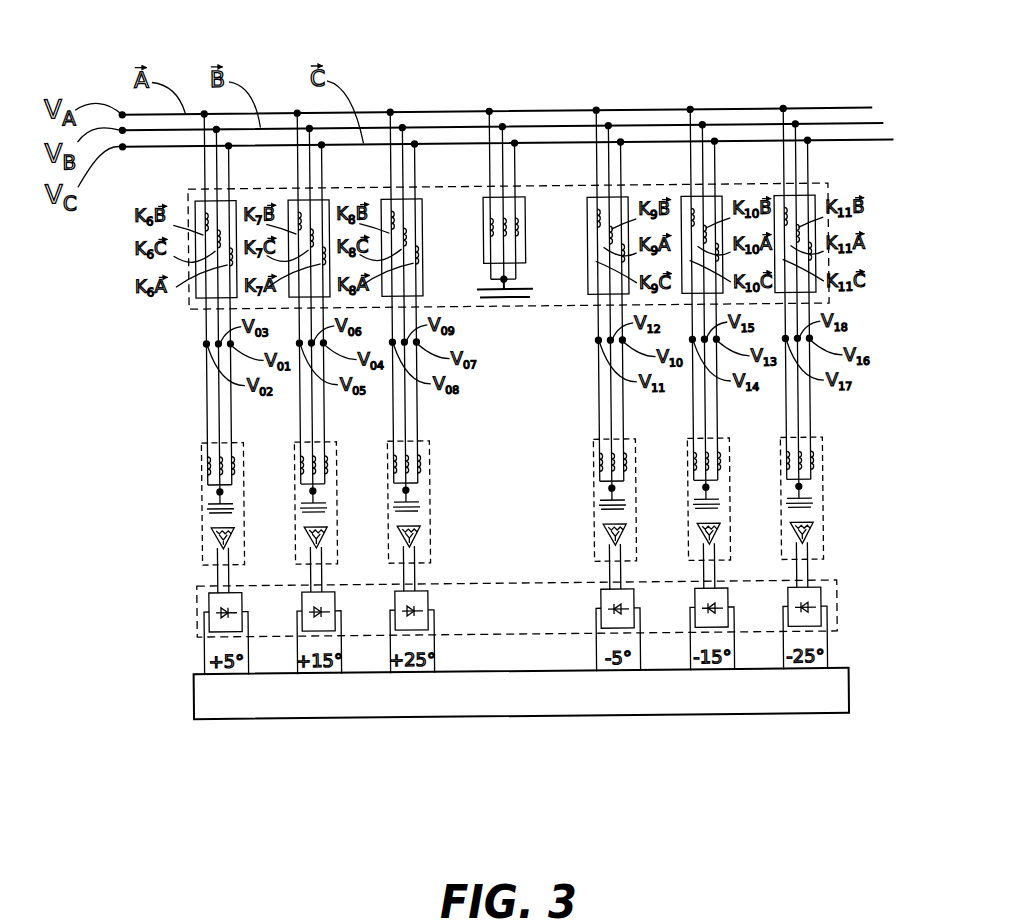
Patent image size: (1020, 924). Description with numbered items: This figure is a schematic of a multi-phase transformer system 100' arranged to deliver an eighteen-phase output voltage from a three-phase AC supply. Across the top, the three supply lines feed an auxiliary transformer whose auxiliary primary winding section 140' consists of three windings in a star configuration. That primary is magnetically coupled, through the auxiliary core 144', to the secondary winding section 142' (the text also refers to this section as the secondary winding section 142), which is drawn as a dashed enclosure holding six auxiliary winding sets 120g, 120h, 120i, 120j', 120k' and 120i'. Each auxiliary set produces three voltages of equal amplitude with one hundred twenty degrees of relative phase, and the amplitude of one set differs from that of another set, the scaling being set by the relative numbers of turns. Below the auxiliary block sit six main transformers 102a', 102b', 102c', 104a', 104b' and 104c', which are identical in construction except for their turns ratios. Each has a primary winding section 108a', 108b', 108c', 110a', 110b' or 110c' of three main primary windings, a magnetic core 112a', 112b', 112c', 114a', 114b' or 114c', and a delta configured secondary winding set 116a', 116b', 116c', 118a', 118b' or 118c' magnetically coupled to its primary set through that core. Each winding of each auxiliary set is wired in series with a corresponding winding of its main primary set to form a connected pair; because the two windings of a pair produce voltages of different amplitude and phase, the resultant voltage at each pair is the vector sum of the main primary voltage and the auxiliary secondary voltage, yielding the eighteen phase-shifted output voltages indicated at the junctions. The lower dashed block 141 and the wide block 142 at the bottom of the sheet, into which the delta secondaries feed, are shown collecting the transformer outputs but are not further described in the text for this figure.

The multi-phase transformer system 100' is at (510, 81).
The auxiliary winding set 120g is at (197, 198).
The auxiliary winding set 120h is at (290, 198).
The auxiliary winding set 120i is at (375, 229).
The auxiliary winding set 120j' is at (638, 223).
The auxiliary winding set 120k' is at (734, 222).
The auxiliary winding set 120i' is at (825, 222).
The auxiliary primary winding section 140' is at (482, 230).
The secondary winding section 142' is at (470, 259).
The core 144' is at (528, 315).
The primary winding section 108a' is at (198, 485).
The primary winding section 108b' is at (291, 484).
The primary winding section 108c' is at (384, 483).
The primary winding section 110a' is at (590, 481).
The primary winding section 110b' is at (684, 480).
The primary winding section 110c' is at (777, 479).
The main transformer 102a' is at (188, 479).
The main transformer 102b' is at (285, 478).
The main transformer 102c' is at (378, 477).
The main transformer 104a' is at (580, 475).
The main transformer 104b' is at (678, 474).
The main transformer 104c' is at (771, 473).
The magnetic core 112a' is at (189, 506).
The magnetic core 112b' is at (286, 505).
The magnetic core 112c' is at (379, 504).
The magnetic core 114a' is at (581, 502).
The magnetic core 114b' is at (679, 501).
The magnetic core 114c' is at (772, 500).
The delta configured secondary winding set 116a' is at (189, 558).
The delta configured secondary winding set 116b' is at (286, 557).
The delta configured secondary winding set 116c' is at (379, 557).
The delta configured secondary winding set 118a' is at (581, 555).
The delta configured secondary winding set 118b' is at (679, 554).
The delta configured secondary winding set 118c' is at (772, 553).
The rectifier bank 141 is at (836, 607).
The secondary winding section 142 is at (544, 671).